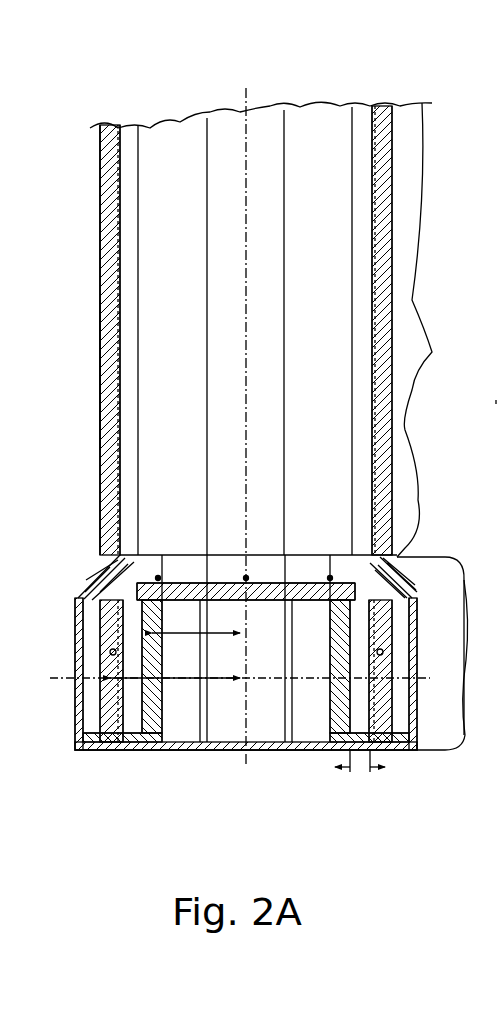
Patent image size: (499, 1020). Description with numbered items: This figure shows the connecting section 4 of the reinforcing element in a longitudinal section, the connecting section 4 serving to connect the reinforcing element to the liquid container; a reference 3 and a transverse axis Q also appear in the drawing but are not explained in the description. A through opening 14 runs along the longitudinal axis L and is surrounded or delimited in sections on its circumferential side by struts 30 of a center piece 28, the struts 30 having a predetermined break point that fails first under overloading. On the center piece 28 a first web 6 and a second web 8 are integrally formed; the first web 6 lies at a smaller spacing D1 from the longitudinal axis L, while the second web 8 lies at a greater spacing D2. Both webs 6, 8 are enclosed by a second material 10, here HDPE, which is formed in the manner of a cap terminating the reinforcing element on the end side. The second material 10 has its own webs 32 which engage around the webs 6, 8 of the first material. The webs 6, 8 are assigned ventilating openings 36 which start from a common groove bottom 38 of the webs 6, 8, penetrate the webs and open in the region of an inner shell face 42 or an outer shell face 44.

The device 3 is at (492, 405).
The connecting section 4 is at (458, 670).
The first web 6 is at (100, 700).
The second web 8 is at (73, 643).
The second material 10 is at (103, 752).
The through opening 14 is at (242, 420).
The center piece 28 is at (432, 352).
The struts 30 is at (171, 140).
The webs 32 is at (318, 750).
The ventilating openings 36 is at (170, 545).
The groove bottom 38 is at (92, 578).
The inner shell face 42 is at (128, 302).
The outer shell face 44 is at (100, 365).
The longitudinal axis L is at (244, 417).
The transverse axis Q is at (238, 679).
The spacing D1 is at (196, 625).
The spacing D2 is at (175, 666).